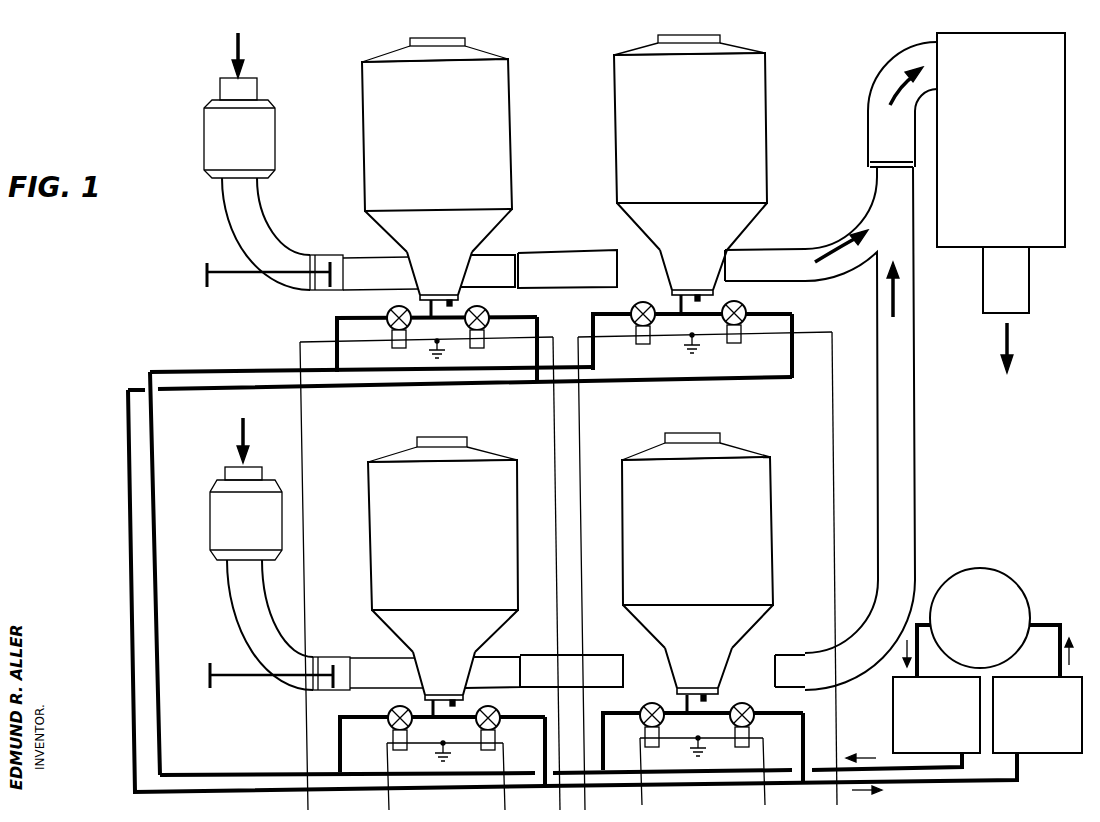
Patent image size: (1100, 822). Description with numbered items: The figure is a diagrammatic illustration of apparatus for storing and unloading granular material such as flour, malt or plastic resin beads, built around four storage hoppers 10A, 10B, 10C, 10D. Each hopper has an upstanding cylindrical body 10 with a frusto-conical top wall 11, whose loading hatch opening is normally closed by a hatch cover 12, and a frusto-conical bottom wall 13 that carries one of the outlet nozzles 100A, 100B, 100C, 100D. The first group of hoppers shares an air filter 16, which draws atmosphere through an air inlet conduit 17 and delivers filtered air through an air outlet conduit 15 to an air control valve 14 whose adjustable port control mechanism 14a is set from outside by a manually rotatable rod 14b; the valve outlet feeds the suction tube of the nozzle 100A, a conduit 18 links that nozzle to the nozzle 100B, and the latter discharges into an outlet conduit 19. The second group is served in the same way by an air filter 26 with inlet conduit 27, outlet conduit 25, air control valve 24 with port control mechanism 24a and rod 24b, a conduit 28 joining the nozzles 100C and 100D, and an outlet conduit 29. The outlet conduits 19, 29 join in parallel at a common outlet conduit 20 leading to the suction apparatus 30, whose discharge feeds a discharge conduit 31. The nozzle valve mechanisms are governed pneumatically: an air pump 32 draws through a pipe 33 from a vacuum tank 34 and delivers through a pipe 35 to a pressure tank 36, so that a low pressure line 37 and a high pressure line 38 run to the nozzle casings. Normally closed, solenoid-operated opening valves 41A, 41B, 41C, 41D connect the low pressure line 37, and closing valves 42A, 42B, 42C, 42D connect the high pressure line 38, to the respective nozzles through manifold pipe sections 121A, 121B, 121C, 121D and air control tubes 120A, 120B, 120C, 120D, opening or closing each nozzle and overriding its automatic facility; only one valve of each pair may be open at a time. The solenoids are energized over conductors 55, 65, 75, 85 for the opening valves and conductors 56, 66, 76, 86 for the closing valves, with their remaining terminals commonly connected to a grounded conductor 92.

The cylindrical body 10 is at (573, 331).
The storage hopper 10A is at (452, 169).
The storage hopper 10B is at (700, 164).
The storage hopper 10C is at (456, 567).
The storage hopper 10D is at (708, 562).
The top wall 11 is at (470, 53).
The hatch cover 12 is at (410, 40).
The bottom wall 13 is at (494, 224).
The air control valve 14 is at (324, 256).
The adjustable port control mechanism 14a is at (338, 272).
The manually rotatable rod 14b is at (229, 277).
The air outlet conduit 15 is at (264, 218).
The air filter 16 is at (248, 167).
The air inlet conduit 17 is at (257, 95).
The conduit 18 is at (540, 253).
The outlet conduit 19 is at (823, 236).
The common outlet conduit 20 is at (868, 135).
The air control valve 24 is at (330, 660).
The adjustable port control mechanism 24a is at (345, 674).
The manually rotatable rod 24b is at (243, 680).
The air outlet conduit 25 is at (240, 623).
The air filter 26 is at (246, 520).
The air inlet conduit 27 is at (224, 470).
The conduit 28 is at (597, 654).
The outlet conduit 29 is at (868, 613).
The suction apparatus 30 is at (1010, 205).
The discharge conduit 31 is at (1029, 293).
The air pump 32 is at (991, 646).
The pipe 33 is at (1058, 670).
The vacuum tank 34 is at (1037, 715).
The pipe 35 is at (917, 663).
The pressure tank 36 is at (936, 715).
The low pressure line 37 is at (778, 312).
The high pressure line 38 is at (334, 334).
The opening valve 41A is at (482, 309).
The opening valve 41B is at (740, 308).
The opening valve 41C is at (490, 708).
The opening valve 41D is at (742, 704).
The closing valve 42A is at (387, 314).
The closing valve 42B is at (634, 308).
The closing valve 42C is at (390, 717).
The closing valve 42D is at (644, 709).
The conductor 55 is at (556, 465).
The conductor 56 is at (303, 488).
The conductor 65 is at (835, 390).
The conductor 66 is at (581, 465).
The conductor 75 is at (505, 763).
The conductor 76 is at (386, 760).
The conductor 85 is at (765, 758).
The conductor 86 is at (638, 756).
The grounded conductor 92 is at (441, 352).
The outlet nozzle 100A is at (442, 255).
The outlet nozzle 100B is at (686, 248).
The outlet nozzle 100C is at (444, 655).
The outlet nozzle 100D is at (691, 649).
The air control tube 120A is at (440, 283).
The air control tube 120B is at (688, 290).
The air control tube 120C is at (445, 683).
The air control tube 120D is at (694, 688).
The manifold section of pipe 121A is at (435, 322).
The manifold section of pipe 121B is at (686, 318).
The manifold section of pipe 121C is at (437, 721).
The manifold section of pipe 121D is at (691, 717).